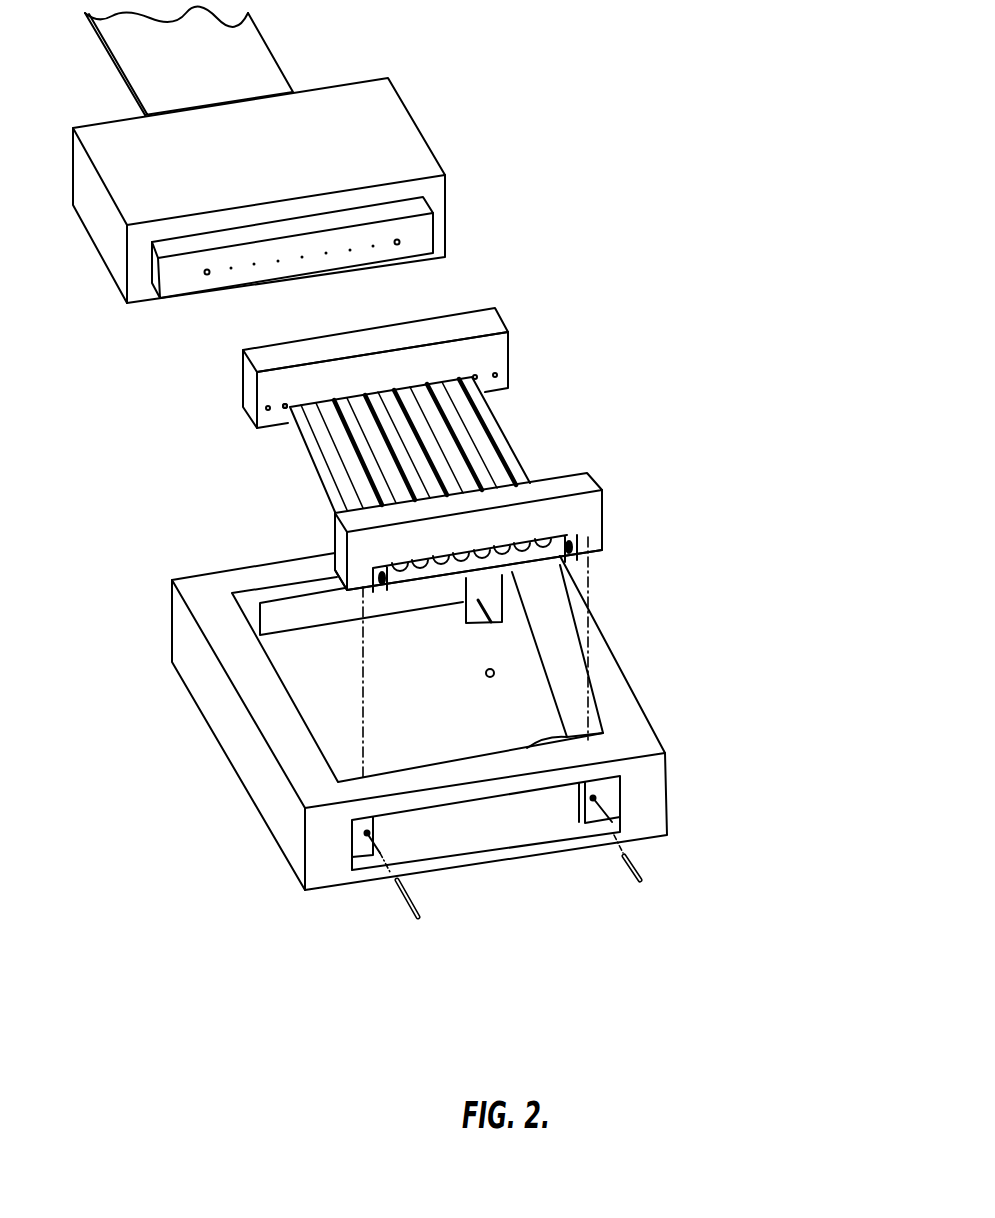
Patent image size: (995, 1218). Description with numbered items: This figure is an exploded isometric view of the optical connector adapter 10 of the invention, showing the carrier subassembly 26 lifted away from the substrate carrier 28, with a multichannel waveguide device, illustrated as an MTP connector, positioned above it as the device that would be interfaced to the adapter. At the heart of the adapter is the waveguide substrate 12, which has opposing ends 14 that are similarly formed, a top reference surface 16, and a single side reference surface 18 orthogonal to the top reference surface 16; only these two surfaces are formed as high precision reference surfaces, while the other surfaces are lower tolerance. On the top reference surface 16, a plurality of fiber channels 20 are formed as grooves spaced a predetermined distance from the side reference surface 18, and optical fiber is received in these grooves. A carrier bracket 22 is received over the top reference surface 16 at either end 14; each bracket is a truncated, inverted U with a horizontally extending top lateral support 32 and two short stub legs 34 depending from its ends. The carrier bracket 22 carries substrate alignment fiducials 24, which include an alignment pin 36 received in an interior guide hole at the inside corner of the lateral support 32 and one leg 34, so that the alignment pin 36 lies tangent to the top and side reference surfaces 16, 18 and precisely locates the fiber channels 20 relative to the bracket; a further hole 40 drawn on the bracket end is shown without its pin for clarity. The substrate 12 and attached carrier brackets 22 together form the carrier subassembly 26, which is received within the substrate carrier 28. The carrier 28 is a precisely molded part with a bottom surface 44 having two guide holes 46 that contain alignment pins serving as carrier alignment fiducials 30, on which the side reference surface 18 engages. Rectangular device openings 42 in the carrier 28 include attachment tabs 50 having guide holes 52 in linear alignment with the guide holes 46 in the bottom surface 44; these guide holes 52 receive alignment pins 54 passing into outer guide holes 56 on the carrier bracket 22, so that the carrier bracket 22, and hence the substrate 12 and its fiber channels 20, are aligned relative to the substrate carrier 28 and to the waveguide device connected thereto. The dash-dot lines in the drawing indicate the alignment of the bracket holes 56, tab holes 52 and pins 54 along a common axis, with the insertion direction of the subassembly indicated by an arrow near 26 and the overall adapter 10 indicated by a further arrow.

The electronic device / printer 10 is at (688, 452).
The substrate 12 is at (316, 446).
The opposing ends 14 is at (550, 558).
The top reference surface 16 is at (378, 378).
The side reference surface 18 is at (510, 438).
The fiber channels 20 is at (452, 403).
The carrier bracket 22 is at (497, 323).
The substrate alignment fiducials 24 is at (490, 360).
The carrier subassembly 26 is at (232, 496).
The substrate carrier 28 is at (467, 771).
The carrier alignment fiducials 30 is at (507, 668).
The top lateral support 32 is at (537, 532).
The stub legs 34 is at (343, 582).
The alignment pin 36 is at (602, 550).
The alignment hole 40 is at (284, 405).
The device openings 42 is at (457, 840).
The bottom surface 44 is at (449, 733).
The guide holes 46 is at (603, 733).
The attachment tabs 50 is at (465, 603).
The guide holes 52 is at (595, 798).
The alignment pins 54 is at (640, 872).
The alignment holes 56 is at (498, 375).